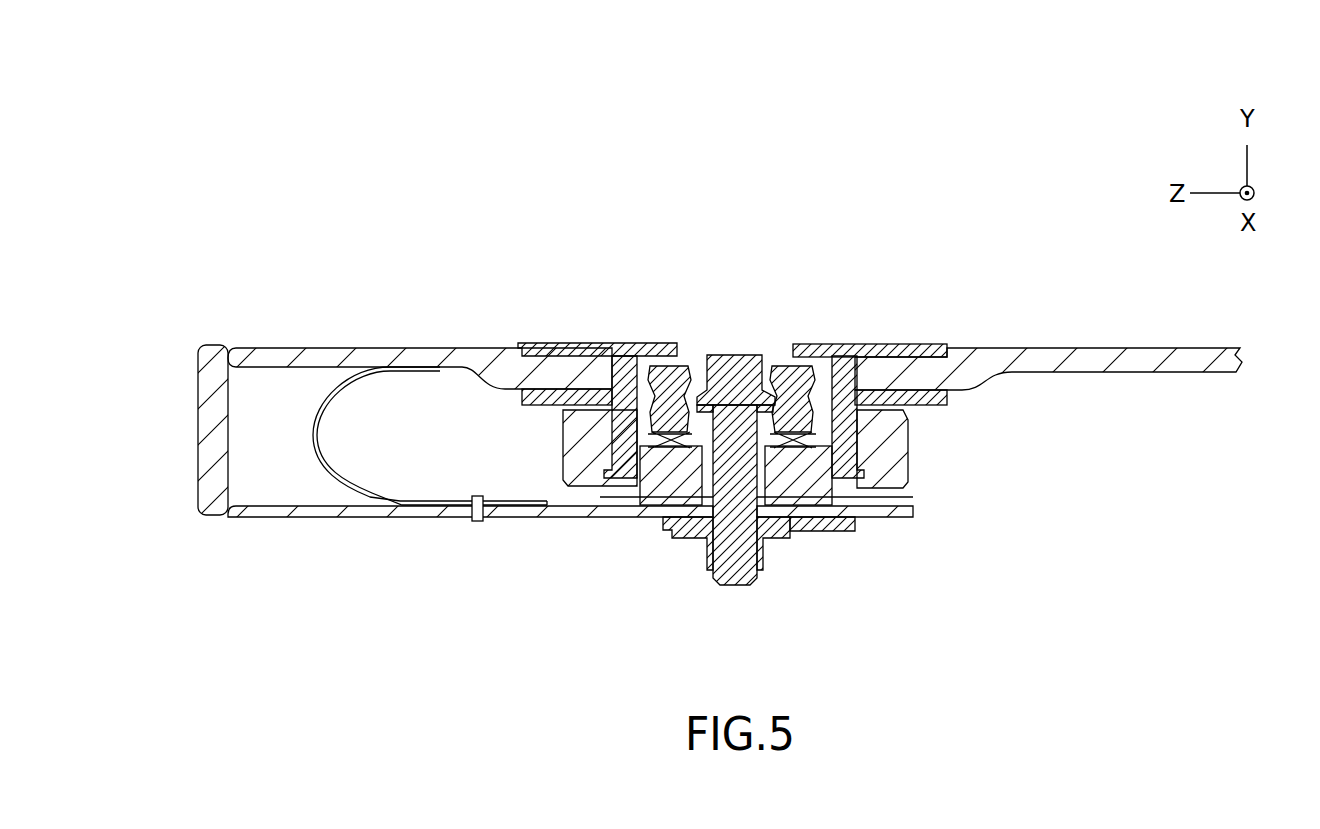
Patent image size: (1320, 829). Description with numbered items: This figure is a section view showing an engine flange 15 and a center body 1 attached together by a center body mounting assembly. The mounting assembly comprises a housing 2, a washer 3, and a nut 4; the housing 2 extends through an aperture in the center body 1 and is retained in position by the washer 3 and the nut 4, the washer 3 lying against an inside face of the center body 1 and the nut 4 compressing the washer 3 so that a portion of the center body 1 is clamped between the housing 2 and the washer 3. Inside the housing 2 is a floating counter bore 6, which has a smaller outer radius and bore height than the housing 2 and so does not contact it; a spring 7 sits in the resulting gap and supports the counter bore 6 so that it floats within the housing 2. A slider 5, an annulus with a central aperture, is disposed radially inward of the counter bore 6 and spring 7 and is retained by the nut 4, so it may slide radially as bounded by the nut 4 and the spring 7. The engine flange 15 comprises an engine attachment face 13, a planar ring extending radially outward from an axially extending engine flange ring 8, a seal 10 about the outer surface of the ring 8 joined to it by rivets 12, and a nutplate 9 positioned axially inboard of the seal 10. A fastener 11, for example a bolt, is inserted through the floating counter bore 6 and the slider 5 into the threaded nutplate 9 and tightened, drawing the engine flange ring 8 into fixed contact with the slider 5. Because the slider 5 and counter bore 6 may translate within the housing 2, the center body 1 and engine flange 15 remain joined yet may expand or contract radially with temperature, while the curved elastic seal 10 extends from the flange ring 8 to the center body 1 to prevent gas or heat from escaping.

The center body 1 is at (486, 347).
The housing 2 is at (898, 344).
The washer 3 is at (945, 405).
The nut 4 is at (908, 490).
The slider 5 is at (790, 496).
The floating counter bore 6 is at (830, 348).
The spring 7 is at (644, 432).
The engine flange ring 8 is at (522, 518).
The nutplate 9 is at (678, 541).
The seal 10 is at (365, 500).
The fastener 11 is at (745, 355).
The rivets 12 is at (470, 517).
The engine attachment face 13 is at (208, 347).
The engine flange 15 is at (198, 518).